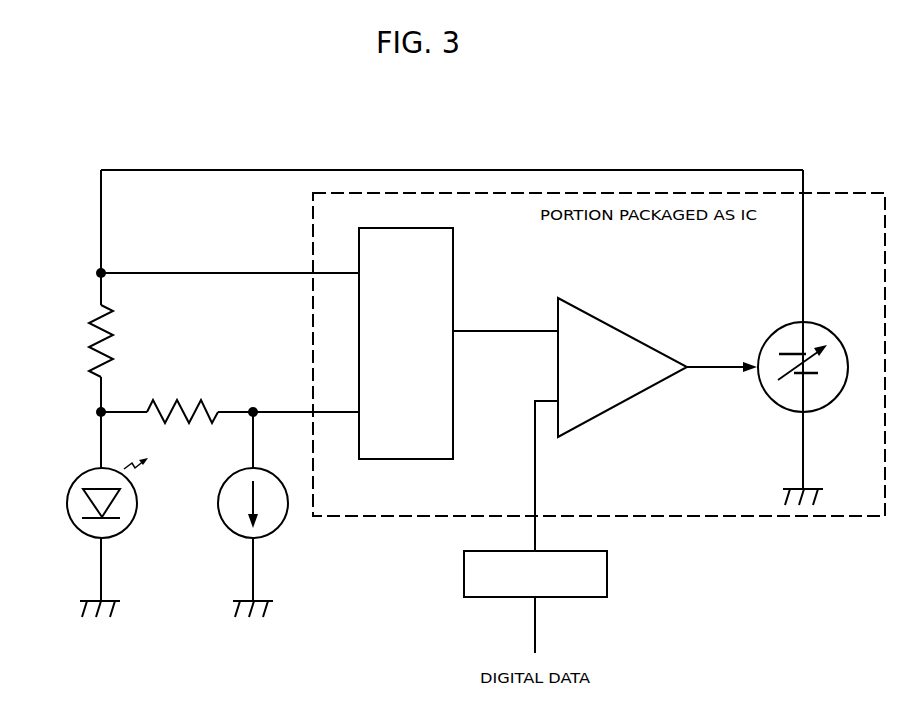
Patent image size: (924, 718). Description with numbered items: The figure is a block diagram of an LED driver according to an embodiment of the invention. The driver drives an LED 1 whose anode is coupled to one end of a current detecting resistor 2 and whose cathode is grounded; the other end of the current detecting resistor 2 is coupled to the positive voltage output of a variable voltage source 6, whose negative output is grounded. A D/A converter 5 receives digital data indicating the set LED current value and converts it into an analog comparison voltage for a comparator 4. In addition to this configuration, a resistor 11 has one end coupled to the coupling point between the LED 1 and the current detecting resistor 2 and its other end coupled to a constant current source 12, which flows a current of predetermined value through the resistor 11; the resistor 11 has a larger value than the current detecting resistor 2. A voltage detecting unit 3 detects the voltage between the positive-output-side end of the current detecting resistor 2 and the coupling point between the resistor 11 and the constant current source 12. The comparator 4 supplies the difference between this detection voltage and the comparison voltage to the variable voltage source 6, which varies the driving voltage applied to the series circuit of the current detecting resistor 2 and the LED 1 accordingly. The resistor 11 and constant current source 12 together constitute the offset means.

The LED 1 is at (66, 503).
The current detecting resistor 2 is at (92, 341).
The voltage detecting unit 3 is at (453, 275).
The comparator 4 is at (608, 324).
The D/A converter 5 is at (607, 576).
The variable voltage source 6 is at (836, 336).
The resistor 11 is at (186, 401).
The constant current source 12 is at (218, 503).